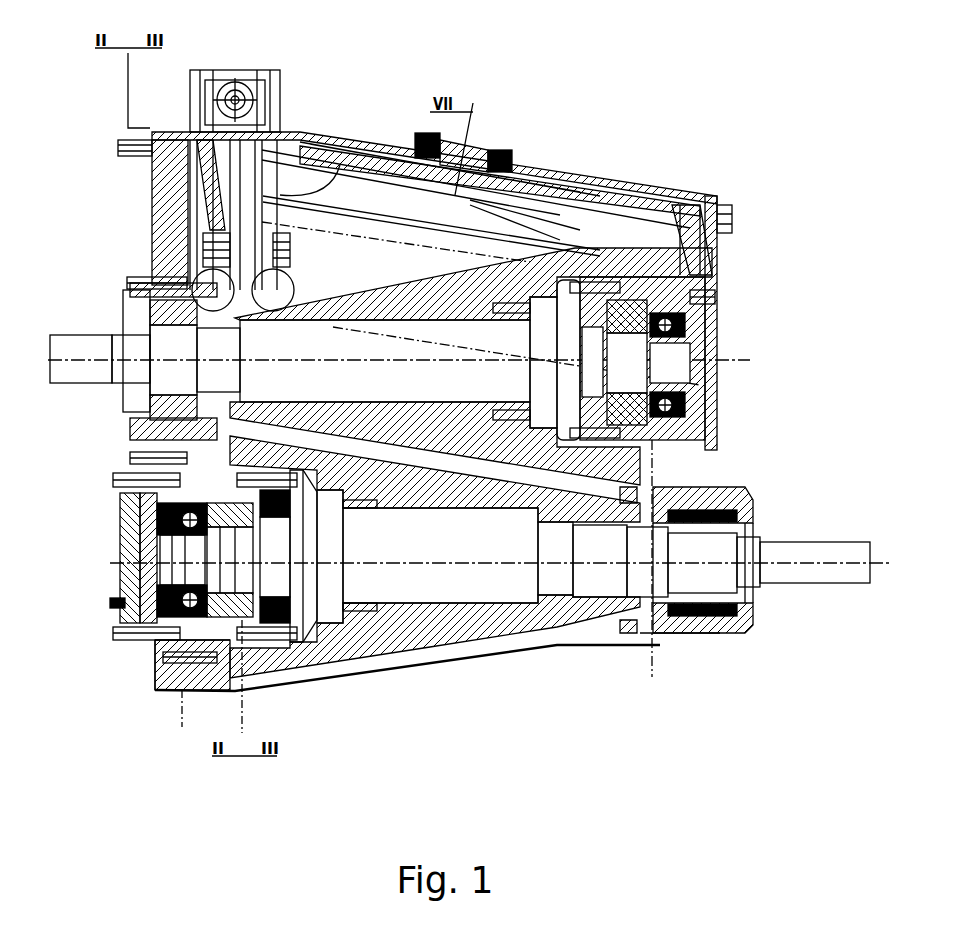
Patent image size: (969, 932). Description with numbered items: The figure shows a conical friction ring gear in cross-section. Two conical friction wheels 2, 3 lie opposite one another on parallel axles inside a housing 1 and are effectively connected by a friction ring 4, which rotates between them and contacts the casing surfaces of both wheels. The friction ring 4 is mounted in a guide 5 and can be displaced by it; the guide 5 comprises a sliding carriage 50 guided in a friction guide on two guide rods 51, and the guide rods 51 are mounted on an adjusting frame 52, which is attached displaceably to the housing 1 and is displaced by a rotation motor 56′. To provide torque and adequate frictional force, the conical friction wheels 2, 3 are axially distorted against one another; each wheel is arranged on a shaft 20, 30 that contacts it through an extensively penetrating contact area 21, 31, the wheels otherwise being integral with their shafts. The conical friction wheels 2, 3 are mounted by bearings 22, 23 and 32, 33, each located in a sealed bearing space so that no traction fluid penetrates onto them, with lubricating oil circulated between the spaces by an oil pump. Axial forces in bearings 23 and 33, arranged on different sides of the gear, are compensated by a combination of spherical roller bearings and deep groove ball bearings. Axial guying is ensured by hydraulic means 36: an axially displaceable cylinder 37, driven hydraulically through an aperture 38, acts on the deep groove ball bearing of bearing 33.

The housing 1 is at (620, 190).
The conical friction wheel 2 is at (563, 267).
The conical friction wheel 3 is at (557, 607).
The friction ring 4 is at (298, 128).
The guide 5 is at (327, 130).
The shaft 20 is at (130, 350).
The contact area 21 is at (455, 300).
The bearing 22 is at (117, 297).
The bearing 23 is at (683, 276).
The shaft 30 is at (808, 570).
The contact area 31 is at (427, 615).
The bearing 32 is at (713, 633).
The bearing 33 is at (147, 647).
The hydraulic means 36 is at (110, 603).
The axially displaceable cylinder 37 is at (128, 562).
The aperture 38 is at (113, 550).
The sliding carriage 50 is at (347, 128).
The guide rods 51 is at (537, 247).
The adjusting frame 52 is at (387, 133).
The rotation motor 56′ is at (253, 87).